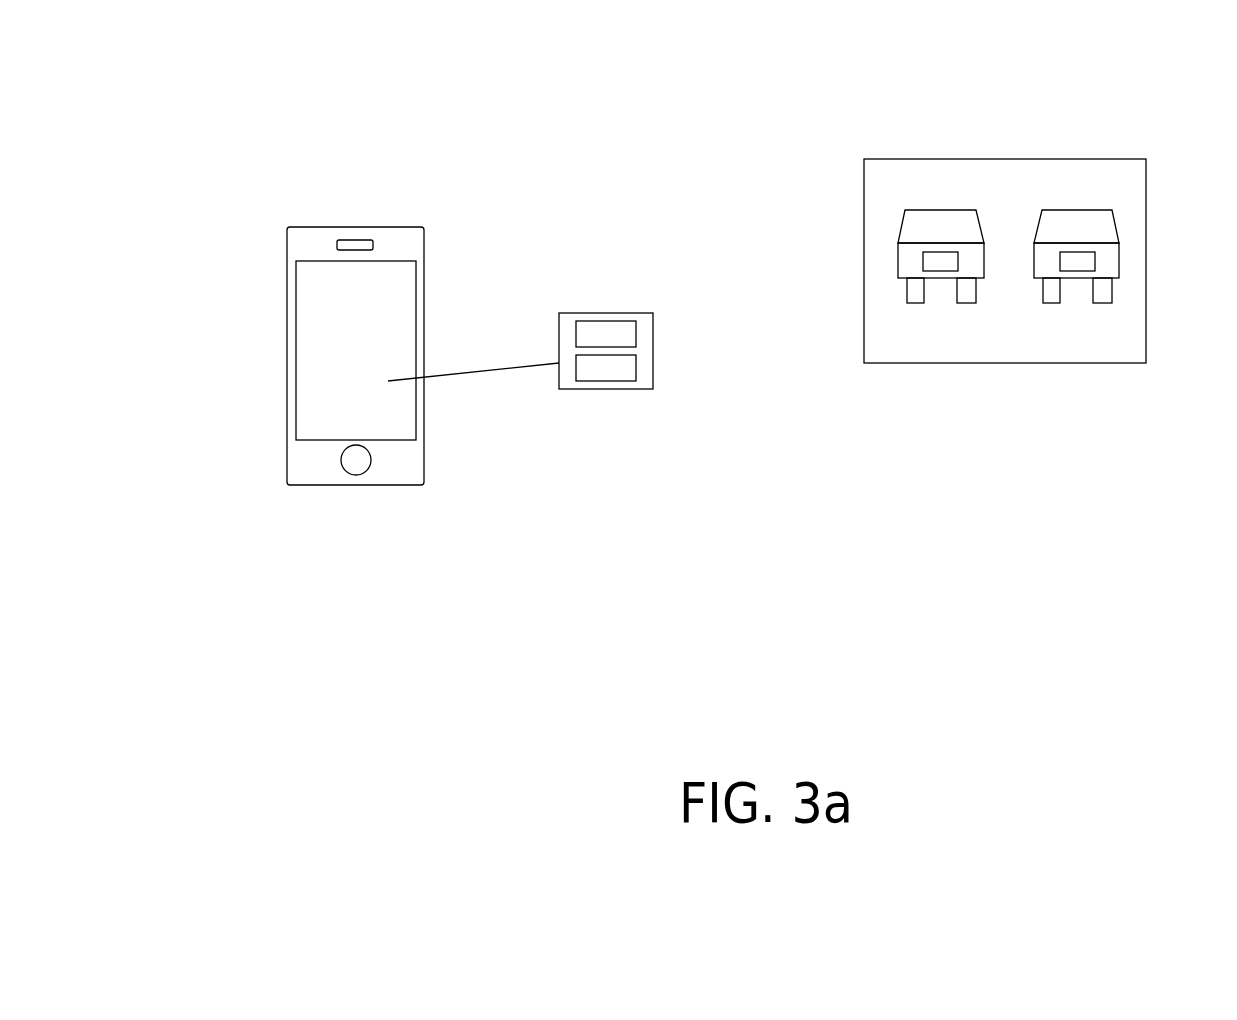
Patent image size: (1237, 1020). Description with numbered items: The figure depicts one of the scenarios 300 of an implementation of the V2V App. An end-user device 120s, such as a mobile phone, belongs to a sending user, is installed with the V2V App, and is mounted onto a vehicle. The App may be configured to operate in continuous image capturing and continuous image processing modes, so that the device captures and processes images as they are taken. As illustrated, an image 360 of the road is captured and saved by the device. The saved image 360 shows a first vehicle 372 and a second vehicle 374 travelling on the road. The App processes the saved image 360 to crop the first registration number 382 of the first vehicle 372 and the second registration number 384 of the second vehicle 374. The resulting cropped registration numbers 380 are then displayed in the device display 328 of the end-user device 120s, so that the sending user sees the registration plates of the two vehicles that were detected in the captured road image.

The end-user device 120s is at (322, 488).
The device display 328 is at (313, 395).
The cropped registration numbers 380 is at (627, 397).
The first registration number 382 is at (607, 317).
The second registration number 384 is at (637, 368).
The image 360 is at (864, 193).
The first vehicle 372 is at (933, 320).
The second vehicle 374 is at (1067, 338).
The scenarios 300 is at (593, 577).